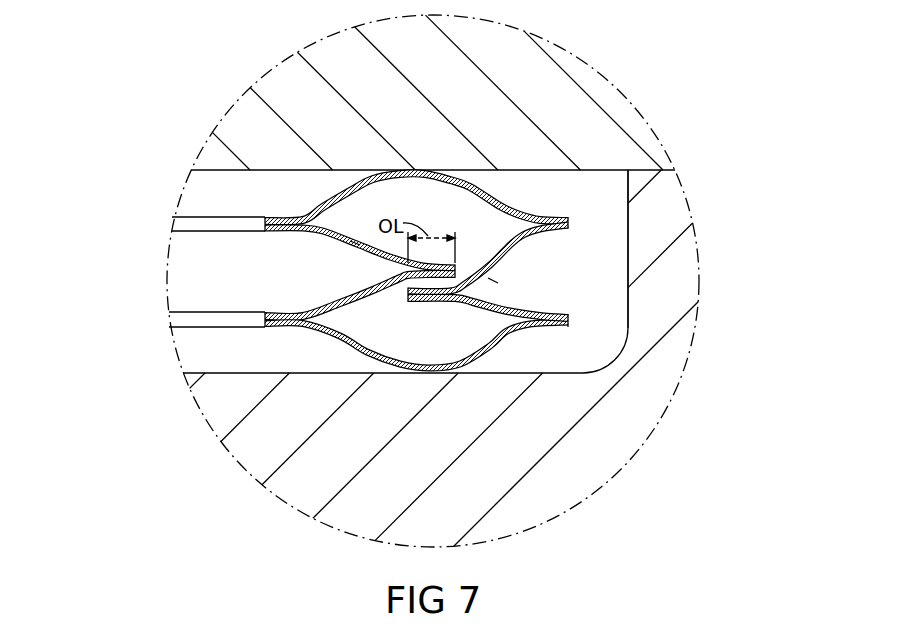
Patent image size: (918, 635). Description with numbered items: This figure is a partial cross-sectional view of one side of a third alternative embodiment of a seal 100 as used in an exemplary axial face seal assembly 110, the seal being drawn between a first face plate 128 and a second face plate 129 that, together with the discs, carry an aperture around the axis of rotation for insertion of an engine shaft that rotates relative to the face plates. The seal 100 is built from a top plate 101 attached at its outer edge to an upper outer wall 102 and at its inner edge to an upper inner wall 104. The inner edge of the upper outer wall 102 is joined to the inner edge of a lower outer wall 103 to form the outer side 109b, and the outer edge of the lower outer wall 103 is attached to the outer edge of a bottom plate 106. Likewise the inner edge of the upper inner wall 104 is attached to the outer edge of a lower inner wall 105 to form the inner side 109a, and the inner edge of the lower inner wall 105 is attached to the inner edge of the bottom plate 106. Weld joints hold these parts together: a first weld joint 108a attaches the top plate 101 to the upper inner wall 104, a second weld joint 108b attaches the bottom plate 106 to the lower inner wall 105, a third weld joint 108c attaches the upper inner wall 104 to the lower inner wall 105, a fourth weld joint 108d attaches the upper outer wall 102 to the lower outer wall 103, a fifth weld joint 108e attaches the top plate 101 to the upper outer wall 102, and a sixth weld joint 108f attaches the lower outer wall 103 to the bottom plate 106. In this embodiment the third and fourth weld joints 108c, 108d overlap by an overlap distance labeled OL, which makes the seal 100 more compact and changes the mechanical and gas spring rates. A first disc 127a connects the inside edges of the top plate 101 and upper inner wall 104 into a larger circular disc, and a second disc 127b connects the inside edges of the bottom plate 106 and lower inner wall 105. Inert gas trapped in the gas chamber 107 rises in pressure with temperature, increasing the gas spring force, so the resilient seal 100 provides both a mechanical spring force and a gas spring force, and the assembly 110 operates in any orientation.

The seal 100 is at (588, 267).
The top plate 101 is at (503, 203).
The upper outer wall 102 is at (513, 243).
The lower outer wall 103 is at (515, 305).
The upper inner wall 104 is at (347, 234).
The lower inner wall 105 is at (345, 305).
The bottom plate 106 is at (507, 334).
The gas chamber 107 is at (390, 340).
The first weld joint 108a is at (265, 226).
The second weld joint 108b is at (265, 319).
The third weld joint 108c is at (458, 266).
The fourth weld joint 108d is at (408, 292).
The fifth weld joint 108e is at (568, 222).
The sixth weld joint 108f is at (568, 319).
The inner side 109a is at (355, 244).
The outer side 109b is at (494, 281).
The axial face seal assembly 110 is at (267, 74).
The first disc 127a is at (172, 223).
The second disc 127b is at (169, 321).
The first face plate 128 is at (258, 450).
The second face plate 129 is at (523, 58).